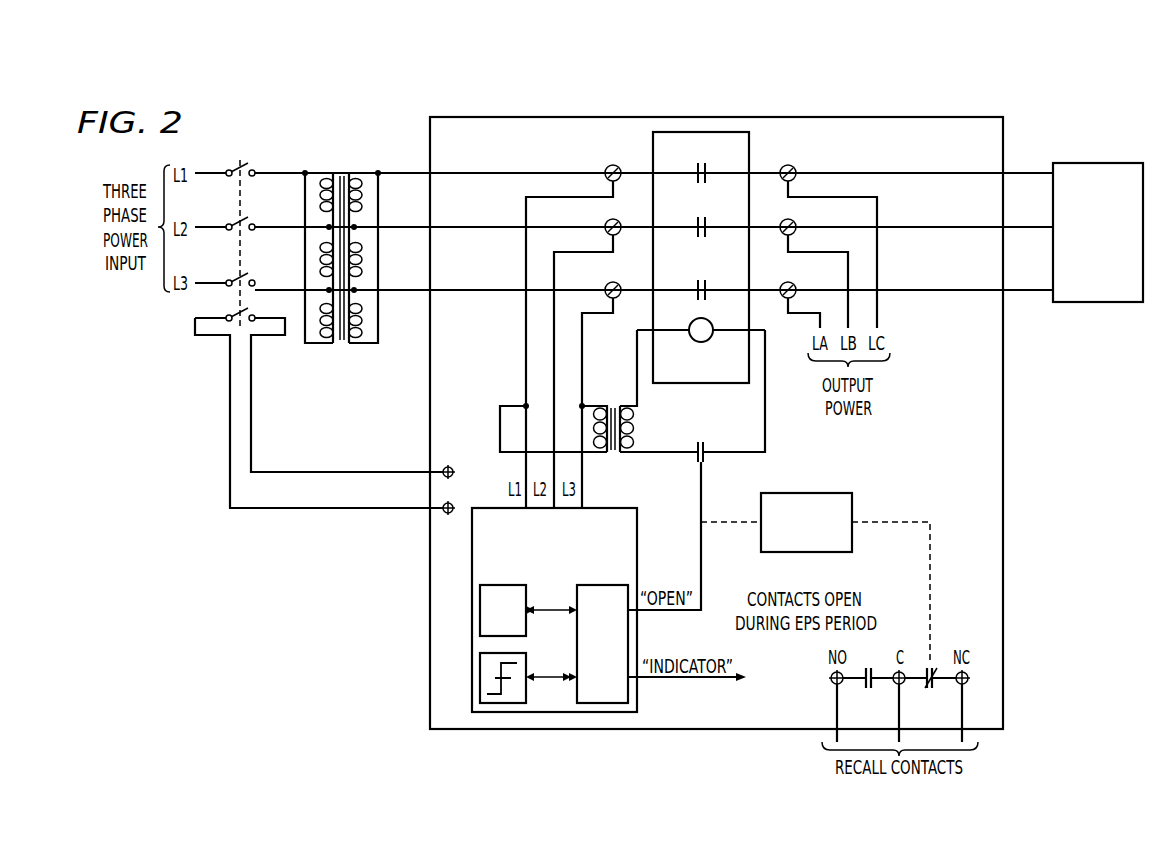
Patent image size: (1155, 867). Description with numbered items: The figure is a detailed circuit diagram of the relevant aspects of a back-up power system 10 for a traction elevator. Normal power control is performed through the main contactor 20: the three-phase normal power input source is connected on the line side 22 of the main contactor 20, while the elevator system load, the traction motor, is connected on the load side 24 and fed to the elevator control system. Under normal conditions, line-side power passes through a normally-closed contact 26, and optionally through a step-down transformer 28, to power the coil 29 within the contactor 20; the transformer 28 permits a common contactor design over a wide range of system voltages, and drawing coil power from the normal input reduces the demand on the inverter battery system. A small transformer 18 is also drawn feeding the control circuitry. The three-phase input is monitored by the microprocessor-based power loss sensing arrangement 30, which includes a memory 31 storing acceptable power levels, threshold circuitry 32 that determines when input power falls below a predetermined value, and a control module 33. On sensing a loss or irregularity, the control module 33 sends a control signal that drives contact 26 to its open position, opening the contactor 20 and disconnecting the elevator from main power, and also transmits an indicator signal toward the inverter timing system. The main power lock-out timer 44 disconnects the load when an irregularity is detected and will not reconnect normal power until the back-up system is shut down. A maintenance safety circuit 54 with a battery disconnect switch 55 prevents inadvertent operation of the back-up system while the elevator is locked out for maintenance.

The back-up power system 10 is at (426, 672).
The transformer 18 is at (603, 403).
The main contactor 20 is at (752, 145).
The line side 22 is at (403, 172).
The load side 24 is at (1029, 172).
The normally-closed contact 26 is at (707, 445).
The step-down transformer 28 is at (625, 454).
The coil 29 is at (701, 342).
The power loss sensing arrangement 30 is at (575, 610).
The memory 31 is at (505, 585).
The threshold circuitry 32 is at (530, 662).
The control module 33 is at (599, 585).
The main power lock-out timer 44 is at (812, 493).
The maintenance safety circuit 54 is at (250, 317).
The battery disconnect switch 55 is at (251, 165).